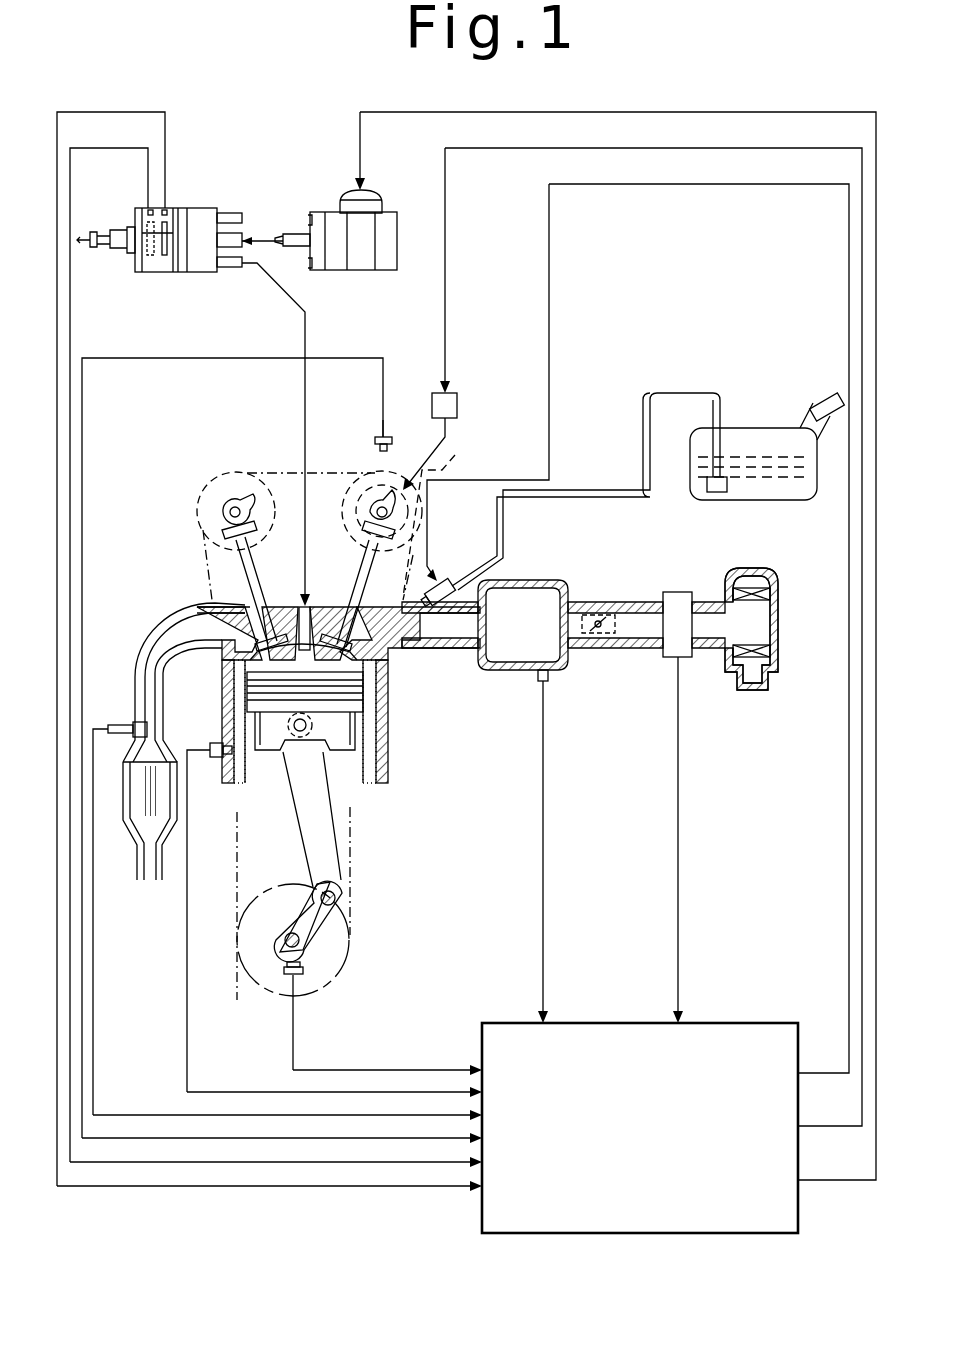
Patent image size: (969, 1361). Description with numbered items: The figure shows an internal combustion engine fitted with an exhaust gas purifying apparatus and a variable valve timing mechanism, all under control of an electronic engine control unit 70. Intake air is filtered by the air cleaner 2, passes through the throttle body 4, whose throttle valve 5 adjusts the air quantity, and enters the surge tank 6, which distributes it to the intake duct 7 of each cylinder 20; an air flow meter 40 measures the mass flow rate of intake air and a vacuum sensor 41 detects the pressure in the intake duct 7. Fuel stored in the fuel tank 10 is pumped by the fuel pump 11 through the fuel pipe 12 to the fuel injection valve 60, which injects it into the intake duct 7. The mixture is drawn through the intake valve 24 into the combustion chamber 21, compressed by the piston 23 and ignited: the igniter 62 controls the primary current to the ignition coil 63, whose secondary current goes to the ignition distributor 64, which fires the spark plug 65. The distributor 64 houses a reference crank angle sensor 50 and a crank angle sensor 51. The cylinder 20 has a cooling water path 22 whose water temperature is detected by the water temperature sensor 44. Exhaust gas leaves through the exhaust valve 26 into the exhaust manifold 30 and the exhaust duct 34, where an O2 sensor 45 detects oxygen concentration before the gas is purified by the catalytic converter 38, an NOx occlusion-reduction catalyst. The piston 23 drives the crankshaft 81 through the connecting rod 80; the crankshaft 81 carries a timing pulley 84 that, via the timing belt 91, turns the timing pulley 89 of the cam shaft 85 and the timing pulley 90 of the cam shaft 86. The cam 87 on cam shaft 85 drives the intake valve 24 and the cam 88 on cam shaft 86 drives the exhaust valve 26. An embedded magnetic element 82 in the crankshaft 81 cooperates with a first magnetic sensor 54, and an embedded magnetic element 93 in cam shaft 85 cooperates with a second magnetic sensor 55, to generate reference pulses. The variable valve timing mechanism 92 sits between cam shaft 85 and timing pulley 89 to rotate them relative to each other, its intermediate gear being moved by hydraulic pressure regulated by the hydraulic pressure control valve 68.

The air cleaner 2 is at (740, 568).
The throttle body 4 is at (575, 650).
The throttle valve 5 is at (582, 624).
The surge tank 6 is at (478, 665).
The intake duct 7 is at (437, 650).
The fuel tank 10 is at (763, 500).
The fuel pump 11 is at (707, 488).
The fuel pipe 12 is at (668, 393).
The cylinder 20 is at (349, 825).
The combustion chamber 21 is at (285, 735).
The cooling water path 22 is at (232, 786).
The piston 23 is at (388, 738).
The intake valve 24 is at (360, 630).
The exhaust valve 26 is at (255, 637).
The exhaust manifold 30 is at (185, 605).
The exhaust duct 34 is at (135, 700).
The catalytic converter 38 is at (118, 830).
The air flow meter 40 is at (668, 658).
The vacuum sensor 41 is at (538, 678).
The water temperature sensor 44 is at (210, 745).
The O2 sensor 45 is at (130, 722).
The reference crank angle sensor 50 is at (174, 208).
The crank angle sensor 51 is at (143, 208).
The first magnetic sensor 54 is at (303, 970).
The second magnetic sensor 55 is at (392, 432).
The fuel injection valve 60 is at (445, 575).
The igniter 62 is at (384, 196).
The ignition coil 63 is at (330, 212).
The ignition distributor 64 is at (210, 208).
The spark plug 65 is at (298, 606).
The hydraulic pressure control valve 68 is at (457, 400).
The electronic engine control unit 70 is at (760, 1023).
The connecting rod 80 is at (370, 900).
The crankshaft 81 is at (330, 905).
The embedded magnetic element 82 is at (280, 948).
The timing pulley 84 is at (240, 970).
The cam shaft 85 is at (362, 540).
The cam shaft 86 is at (222, 512).
The cam 87 is at (360, 518).
The cam 88 is at (222, 503).
The timing pulley 89 is at (350, 482).
The timing pulley 90 is at (268, 488).
The timing belt 91 is at (200, 572).
The variable valve timing mechanism 92 is at (446, 512).
The embedded magnetic element 93 is at (403, 443).